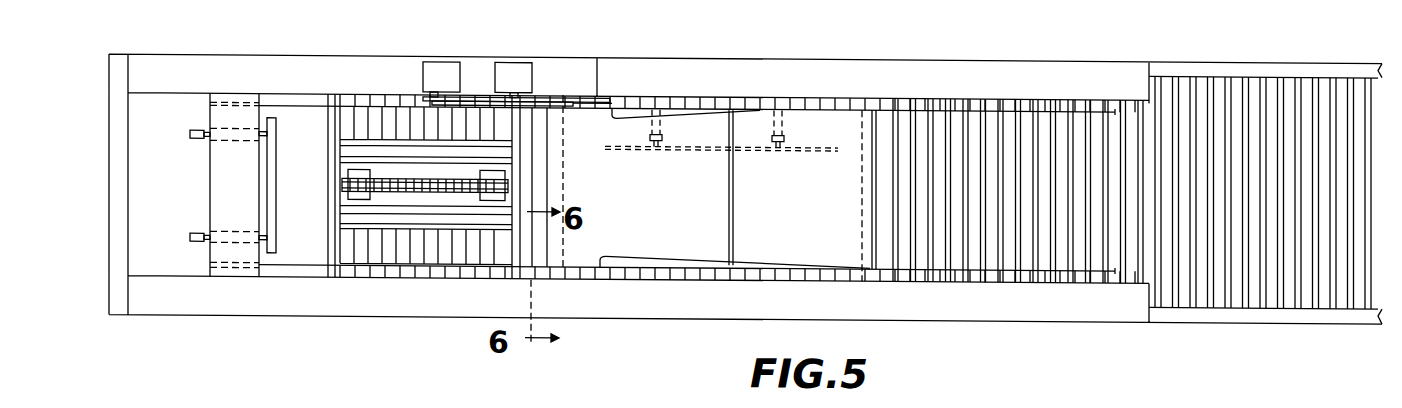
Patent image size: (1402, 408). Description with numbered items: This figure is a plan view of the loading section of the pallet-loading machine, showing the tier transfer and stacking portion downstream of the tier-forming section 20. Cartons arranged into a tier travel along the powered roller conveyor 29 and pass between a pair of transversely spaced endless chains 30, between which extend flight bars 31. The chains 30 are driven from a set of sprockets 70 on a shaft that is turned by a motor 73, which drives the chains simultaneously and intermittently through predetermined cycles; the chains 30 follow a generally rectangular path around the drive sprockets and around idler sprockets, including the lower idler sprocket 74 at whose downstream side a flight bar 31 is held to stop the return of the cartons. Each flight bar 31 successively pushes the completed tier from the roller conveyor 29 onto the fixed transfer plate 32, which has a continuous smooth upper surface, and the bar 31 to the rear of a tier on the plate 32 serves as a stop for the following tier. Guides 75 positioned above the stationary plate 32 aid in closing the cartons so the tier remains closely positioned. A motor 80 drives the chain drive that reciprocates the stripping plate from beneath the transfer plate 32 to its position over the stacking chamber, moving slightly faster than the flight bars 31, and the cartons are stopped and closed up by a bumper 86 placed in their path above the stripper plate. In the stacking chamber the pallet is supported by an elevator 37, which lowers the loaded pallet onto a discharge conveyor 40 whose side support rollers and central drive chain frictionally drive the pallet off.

The tier-forming section 20 is at (1088, 61).
The roller conveyor 29 is at (1305, 102).
The endless chains 30 is at (1028, 98).
The flight bars 31 is at (561, 167).
The transfer plate 32 is at (813, 246).
The elevator 37 is at (335, 211).
The discharge conveyor 40 is at (418, 254).
The sprockets 70 is at (554, 99).
The motor 73 is at (519, 72).
The lower idler sprocket 74 is at (577, 112).
The guides 75 is at (637, 114).
The motor 80 is at (441, 70).
The bumper 86 is at (278, 159).